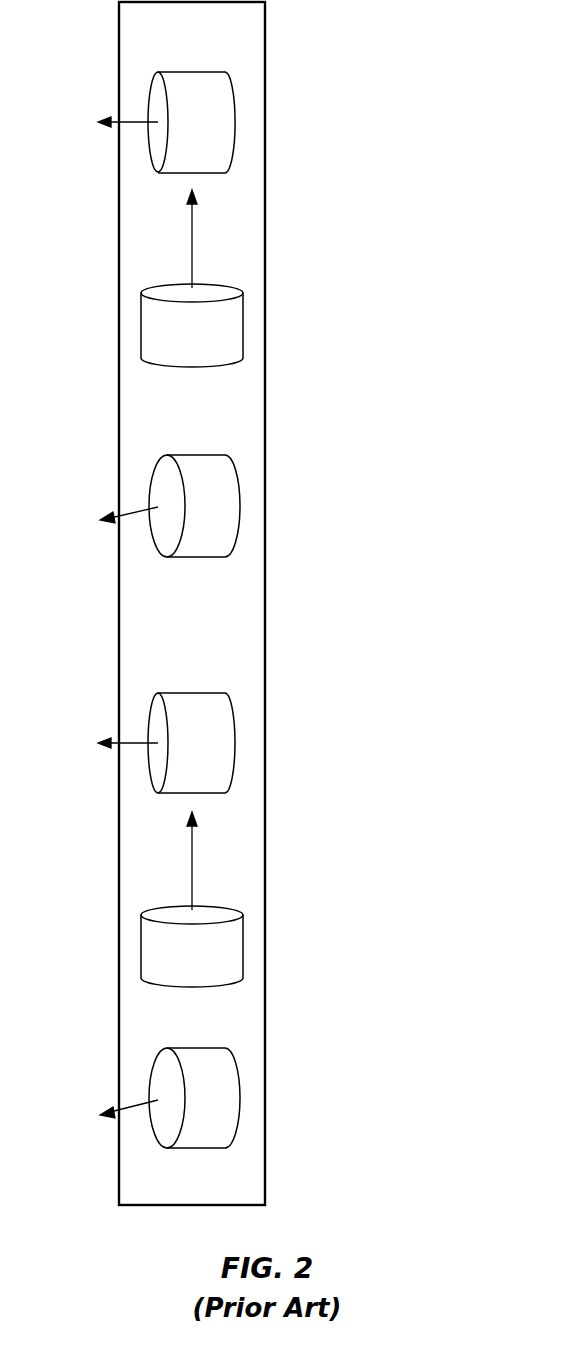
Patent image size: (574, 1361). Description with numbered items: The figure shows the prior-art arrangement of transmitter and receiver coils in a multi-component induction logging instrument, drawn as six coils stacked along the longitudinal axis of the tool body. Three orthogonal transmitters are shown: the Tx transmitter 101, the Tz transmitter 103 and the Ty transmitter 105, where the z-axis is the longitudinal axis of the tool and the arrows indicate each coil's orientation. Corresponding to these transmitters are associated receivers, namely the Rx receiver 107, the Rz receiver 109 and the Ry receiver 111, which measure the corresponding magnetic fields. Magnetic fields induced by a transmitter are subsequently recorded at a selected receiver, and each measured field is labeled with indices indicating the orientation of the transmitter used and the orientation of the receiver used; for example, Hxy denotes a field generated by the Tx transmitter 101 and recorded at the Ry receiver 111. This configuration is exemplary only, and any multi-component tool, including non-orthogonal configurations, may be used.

The Tx transmitter 101 is at (350, 104).
The Tz transmitter 103 is at (350, 315).
The Ty transmitter 105 is at (350, 489).
The Rx receiver 107 is at (350, 722).
The Rz receiver 109 is at (350, 926).
The Ry receiver 111 is at (350, 1077).